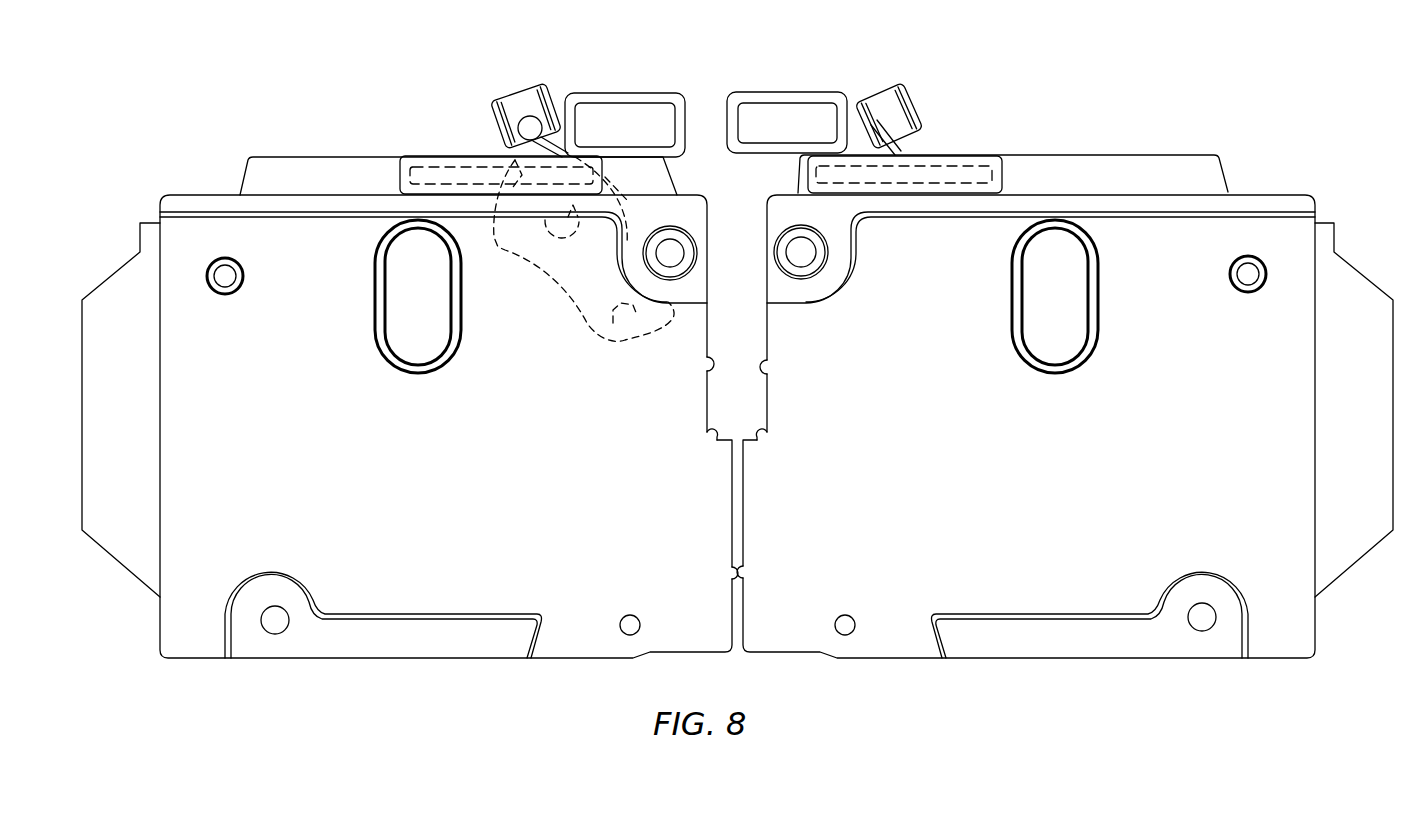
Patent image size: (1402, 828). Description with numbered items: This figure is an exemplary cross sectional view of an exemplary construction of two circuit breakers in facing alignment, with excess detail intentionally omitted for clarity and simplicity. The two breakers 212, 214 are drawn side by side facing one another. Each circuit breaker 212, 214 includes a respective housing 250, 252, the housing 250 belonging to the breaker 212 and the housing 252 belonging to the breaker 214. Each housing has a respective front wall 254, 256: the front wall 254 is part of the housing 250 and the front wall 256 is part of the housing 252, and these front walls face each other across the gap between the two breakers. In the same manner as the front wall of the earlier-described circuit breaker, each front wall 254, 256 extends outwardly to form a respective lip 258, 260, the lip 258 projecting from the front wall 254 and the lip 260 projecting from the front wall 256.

The circuit breaker 212 is at (360, 142).
The circuit breaker 214 is at (1109, 140).
The housing 250 is at (412, 447).
The housing 252 is at (1067, 447).
The front wall 254 is at (705, 365).
The front wall 256 is at (767, 370).
The lip 258 is at (705, 437).
The lip 260 is at (768, 437).